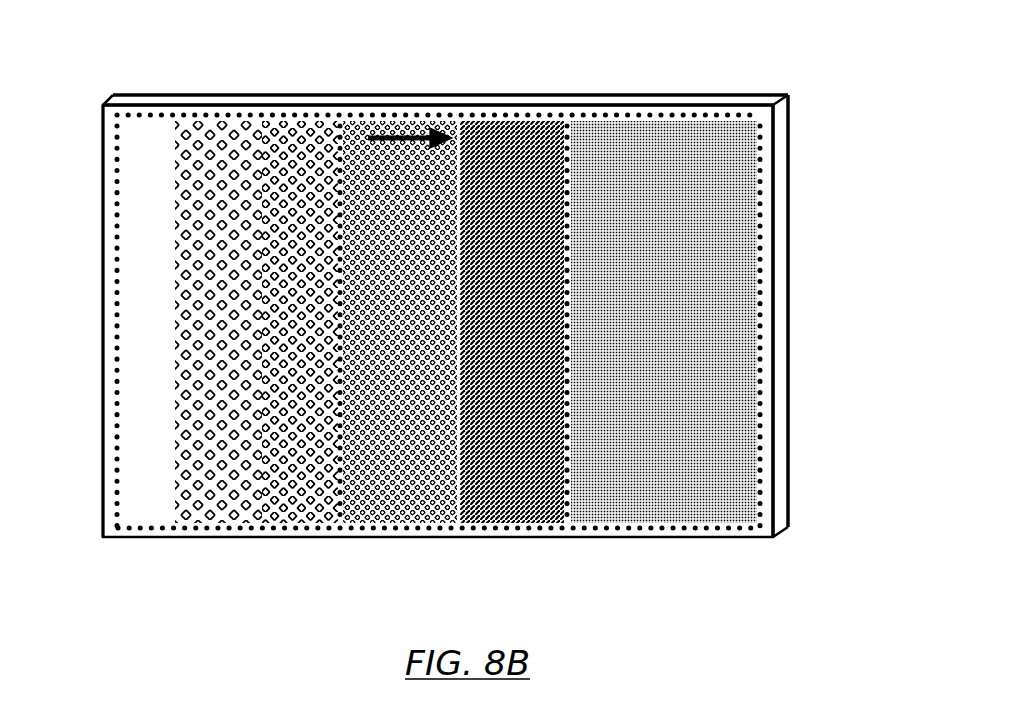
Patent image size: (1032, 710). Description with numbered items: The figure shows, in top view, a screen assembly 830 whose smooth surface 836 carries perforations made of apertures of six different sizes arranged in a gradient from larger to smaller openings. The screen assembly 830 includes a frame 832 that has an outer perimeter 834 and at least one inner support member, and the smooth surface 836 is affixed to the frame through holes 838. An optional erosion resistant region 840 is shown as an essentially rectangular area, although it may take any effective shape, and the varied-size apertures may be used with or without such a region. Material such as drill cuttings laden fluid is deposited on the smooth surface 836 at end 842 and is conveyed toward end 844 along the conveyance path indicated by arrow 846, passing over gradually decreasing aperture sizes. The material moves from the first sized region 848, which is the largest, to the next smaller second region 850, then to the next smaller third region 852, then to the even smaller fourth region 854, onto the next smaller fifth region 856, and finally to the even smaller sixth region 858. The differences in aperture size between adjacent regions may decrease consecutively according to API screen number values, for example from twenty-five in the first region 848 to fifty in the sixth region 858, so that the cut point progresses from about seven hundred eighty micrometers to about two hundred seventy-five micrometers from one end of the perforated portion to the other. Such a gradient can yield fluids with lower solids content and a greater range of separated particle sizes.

The screen assembly 830 is at (707, 62).
The frame 832 is at (357, 95).
The outer perimeter 834 is at (789, 200).
The smooth surface 836 is at (456, 112).
The holes 838 is at (568, 113).
The erosion resistant region 840 is at (176, 341).
The end 842 is at (103, 331).
The end 844 is at (775, 351).
The arrow 846 is at (413, 134).
The first sized region 848 is at (262, 545).
The second region 850 is at (333, 545).
The third region 852 is at (455, 545).
The fourth region 854 is at (560, 545).
The fifth region 856 is at (660, 545).
The sixth region 858 is at (750, 545).